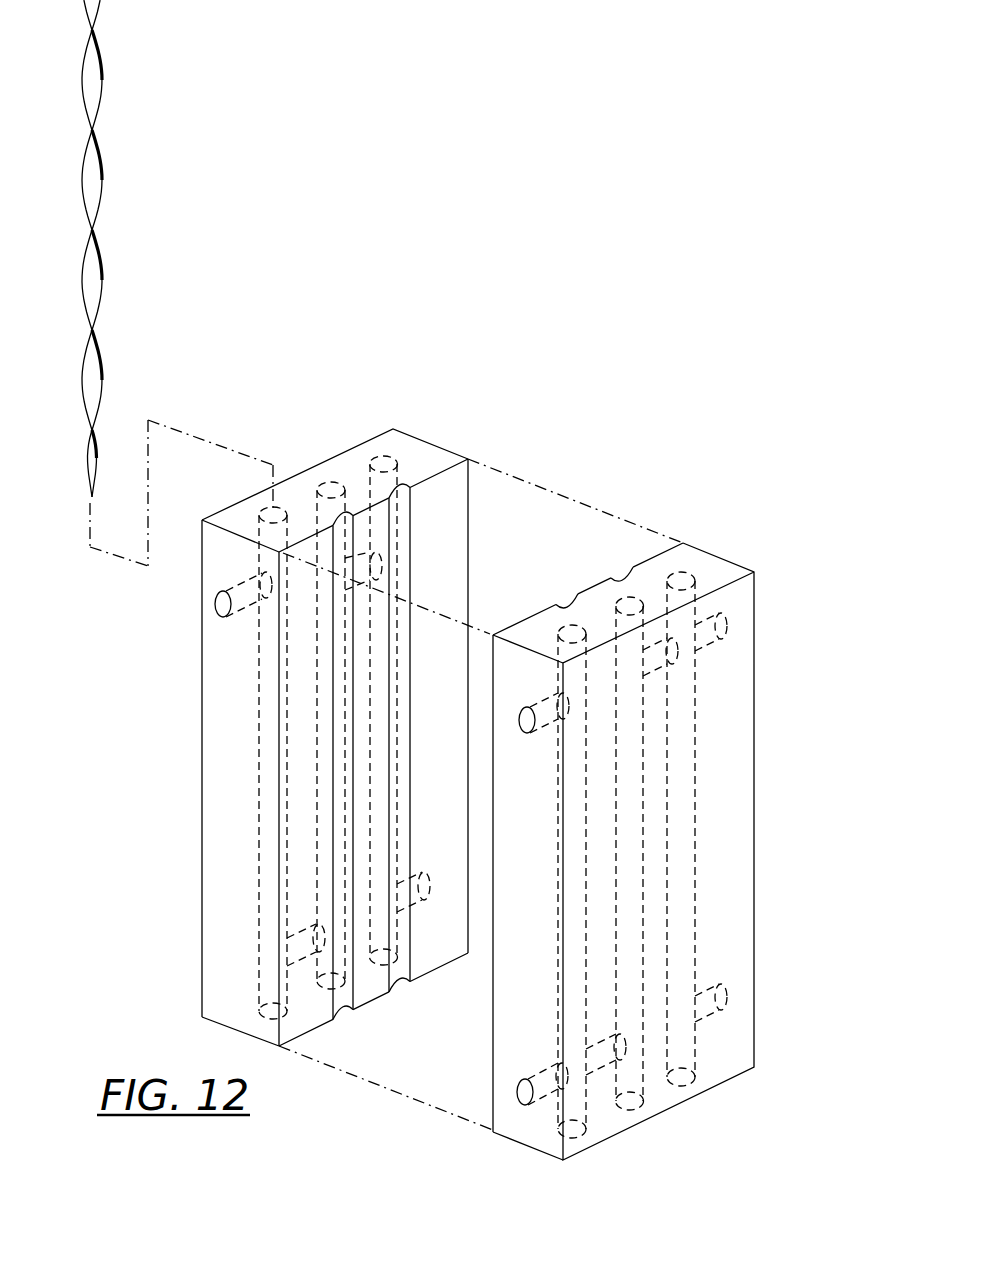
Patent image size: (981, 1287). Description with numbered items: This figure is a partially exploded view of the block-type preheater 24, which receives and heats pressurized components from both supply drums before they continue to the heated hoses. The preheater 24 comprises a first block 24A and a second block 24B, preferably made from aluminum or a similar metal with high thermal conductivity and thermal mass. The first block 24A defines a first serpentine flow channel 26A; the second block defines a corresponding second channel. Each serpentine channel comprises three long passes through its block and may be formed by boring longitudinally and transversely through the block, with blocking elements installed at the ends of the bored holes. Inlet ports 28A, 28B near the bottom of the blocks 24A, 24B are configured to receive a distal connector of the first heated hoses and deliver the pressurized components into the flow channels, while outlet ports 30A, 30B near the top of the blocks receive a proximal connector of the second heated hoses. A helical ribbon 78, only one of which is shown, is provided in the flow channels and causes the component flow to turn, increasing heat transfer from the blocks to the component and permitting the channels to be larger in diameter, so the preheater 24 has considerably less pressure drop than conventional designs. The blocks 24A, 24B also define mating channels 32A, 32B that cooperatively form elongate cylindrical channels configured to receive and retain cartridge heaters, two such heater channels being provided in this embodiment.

The preheater 24 is at (568, 460).
The first block 24A is at (699, 567).
The second block 24B is at (415, 460).
The first serpentine flow channel 26A is at (695, 784).
The inlet port 28A is at (718, 1017).
The inlet port 28B is at (422, 907).
The outlet port 30A is at (516, 722).
The outlet port 30B is at (214, 604).
The mating channel 32A is at (565, 607).
The mating channel 32B is at (333, 513).
The helical ribbon 78 is at (98, 264).